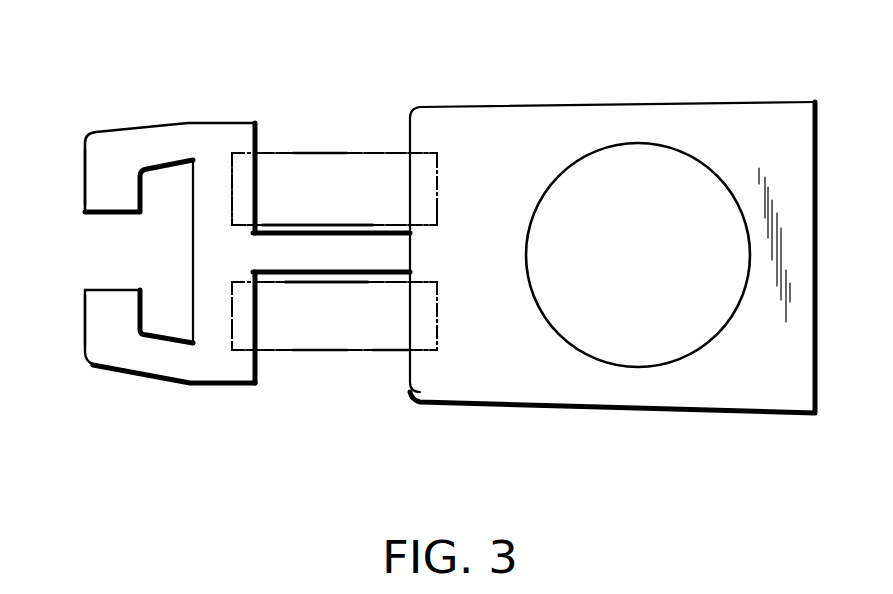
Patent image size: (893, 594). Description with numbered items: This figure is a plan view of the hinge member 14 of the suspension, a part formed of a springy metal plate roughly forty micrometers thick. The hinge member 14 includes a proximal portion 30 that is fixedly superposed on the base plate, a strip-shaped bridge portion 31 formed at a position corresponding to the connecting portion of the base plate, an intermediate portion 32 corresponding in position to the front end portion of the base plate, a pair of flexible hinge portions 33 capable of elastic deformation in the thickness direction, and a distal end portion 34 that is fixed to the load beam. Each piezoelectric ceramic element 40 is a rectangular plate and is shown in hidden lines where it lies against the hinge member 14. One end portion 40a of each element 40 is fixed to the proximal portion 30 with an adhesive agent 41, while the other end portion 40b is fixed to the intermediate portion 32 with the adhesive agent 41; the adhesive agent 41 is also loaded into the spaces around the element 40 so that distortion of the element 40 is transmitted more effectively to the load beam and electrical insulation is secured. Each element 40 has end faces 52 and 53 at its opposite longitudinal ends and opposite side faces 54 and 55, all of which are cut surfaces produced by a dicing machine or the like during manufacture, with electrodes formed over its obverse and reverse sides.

The hinge member 14 is at (153, 239).
The proximal portion 30 is at (742, 118).
The bridge portion 31 is at (340, 243).
The intermediate portion 32 is at (203, 283).
The flexible hinge portions 33 is at (163, 126).
The distal end portion 34 is at (96, 178).
The piezoelectric ceramic element 40 is at (343, 153).
The one end portion 40a is at (422, 176).
The other end portion 40b is at (232, 110).
The adhesive agent 41 is at (245, 292).
The end face 52 is at (437, 208).
The end face 53 is at (232, 196).
The side face 54 is at (375, 223).
The side face 55 is at (296, 152).